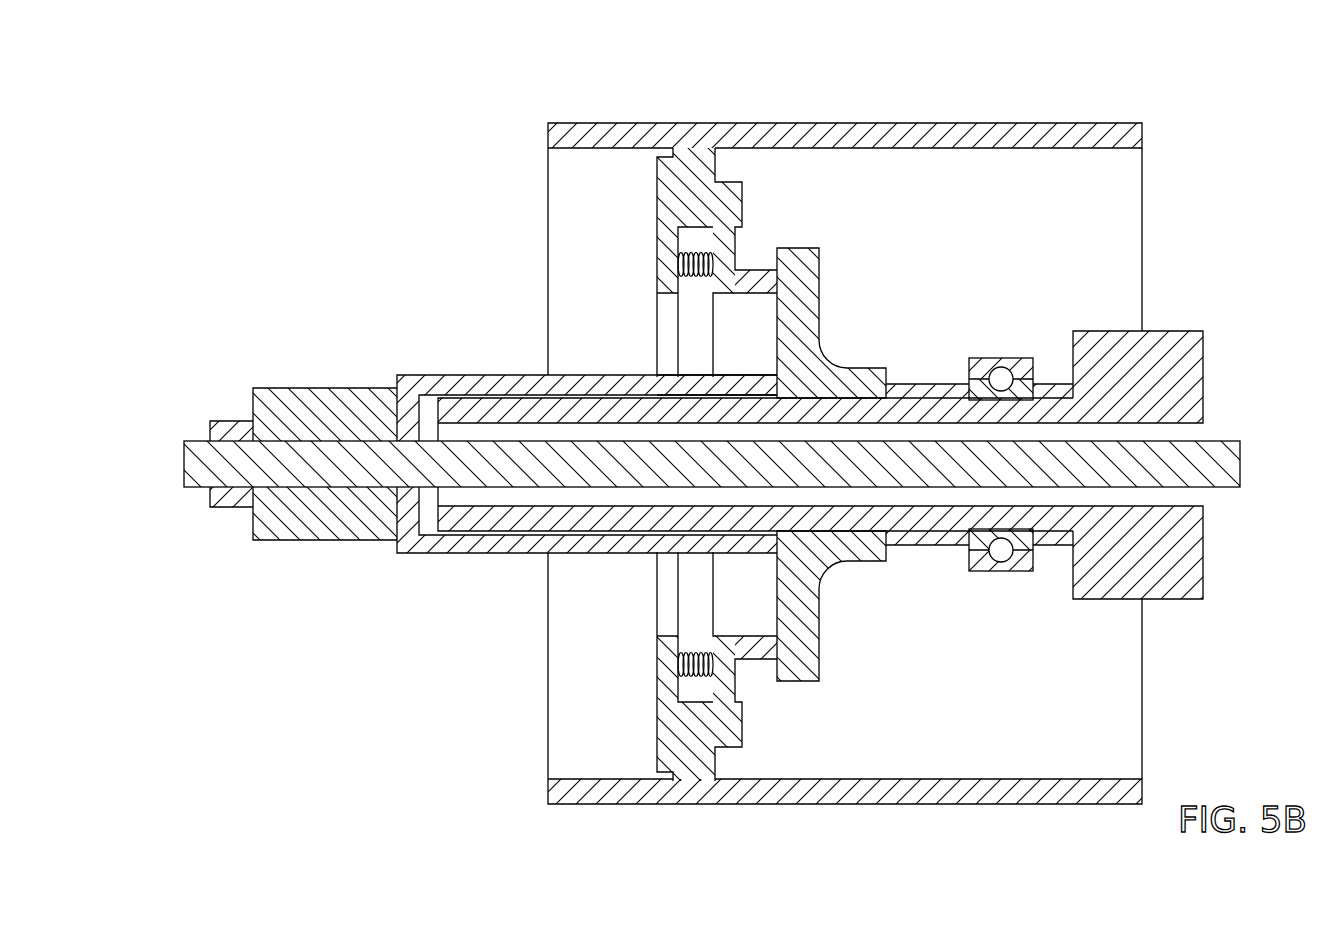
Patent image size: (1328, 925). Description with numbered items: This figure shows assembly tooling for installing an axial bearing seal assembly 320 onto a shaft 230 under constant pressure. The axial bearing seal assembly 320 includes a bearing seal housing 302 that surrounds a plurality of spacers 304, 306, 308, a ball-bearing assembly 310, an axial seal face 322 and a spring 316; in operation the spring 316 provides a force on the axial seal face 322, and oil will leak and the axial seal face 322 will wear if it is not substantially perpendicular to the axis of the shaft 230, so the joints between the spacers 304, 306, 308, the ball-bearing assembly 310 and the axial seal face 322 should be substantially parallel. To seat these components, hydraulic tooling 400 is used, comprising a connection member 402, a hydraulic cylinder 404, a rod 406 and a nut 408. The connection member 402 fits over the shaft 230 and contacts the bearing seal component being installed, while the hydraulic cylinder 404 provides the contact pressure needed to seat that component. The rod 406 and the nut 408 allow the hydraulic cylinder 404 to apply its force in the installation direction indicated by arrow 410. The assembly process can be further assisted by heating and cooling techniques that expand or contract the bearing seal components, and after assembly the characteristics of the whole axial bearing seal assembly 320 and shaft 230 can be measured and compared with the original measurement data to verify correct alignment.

The bearing seal housing 302 is at (617, 122).
The axial bearing seal assembly 320 is at (845, 426).
The hydraulic tooling 400 is at (359, 266).
The axial seal face 322 is at (758, 271).
The spring 316 is at (678, 266).
The connection member 402 is at (412, 375).
The spacer 308 is at (740, 376).
The shaft 230 is at (505, 398).
The spacer 304 is at (1052, 384).
The spacer 306 is at (928, 384).
The ball-bearing assembly 310 is at (1000, 366).
The rod 406 is at (184, 440).
The hydraulic cylinder 404 is at (280, 387).
The nut 408 is at (220, 420).
The arrow 410 is at (390, 623).